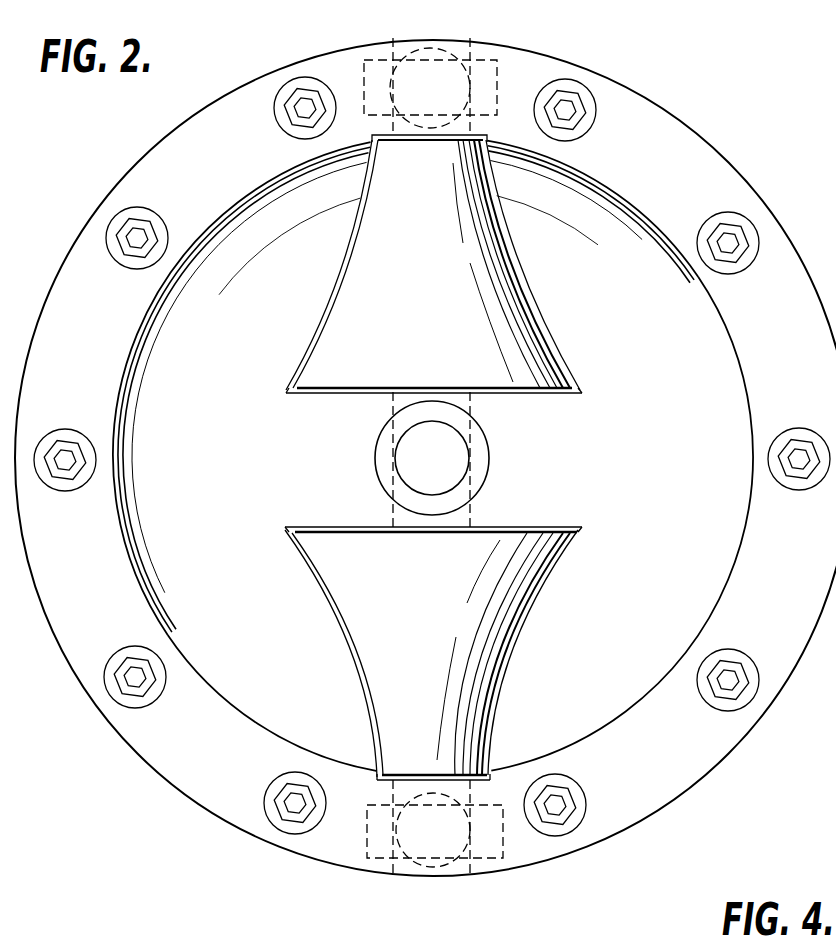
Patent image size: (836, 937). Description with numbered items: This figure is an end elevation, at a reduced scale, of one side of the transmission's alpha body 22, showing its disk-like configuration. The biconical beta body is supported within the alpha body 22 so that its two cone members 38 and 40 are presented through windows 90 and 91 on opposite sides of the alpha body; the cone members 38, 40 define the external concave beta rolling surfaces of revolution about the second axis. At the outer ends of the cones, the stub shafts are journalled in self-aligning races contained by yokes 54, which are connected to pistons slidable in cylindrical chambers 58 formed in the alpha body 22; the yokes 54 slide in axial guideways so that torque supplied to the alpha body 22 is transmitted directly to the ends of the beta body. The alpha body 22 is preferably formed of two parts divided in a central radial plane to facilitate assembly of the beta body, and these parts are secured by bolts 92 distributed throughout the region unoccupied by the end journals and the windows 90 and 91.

The alpha body 22 is at (684, 534).
The cone member 38 is at (434, 264).
The cone member 40 is at (433, 653).
The yoke 54 is at (497, 78).
The cylindrical chamber 58 is at (395, 63).
The window 90 is at (518, 291).
The window 91 is at (500, 684).
The bolt 92 is at (583, 112).